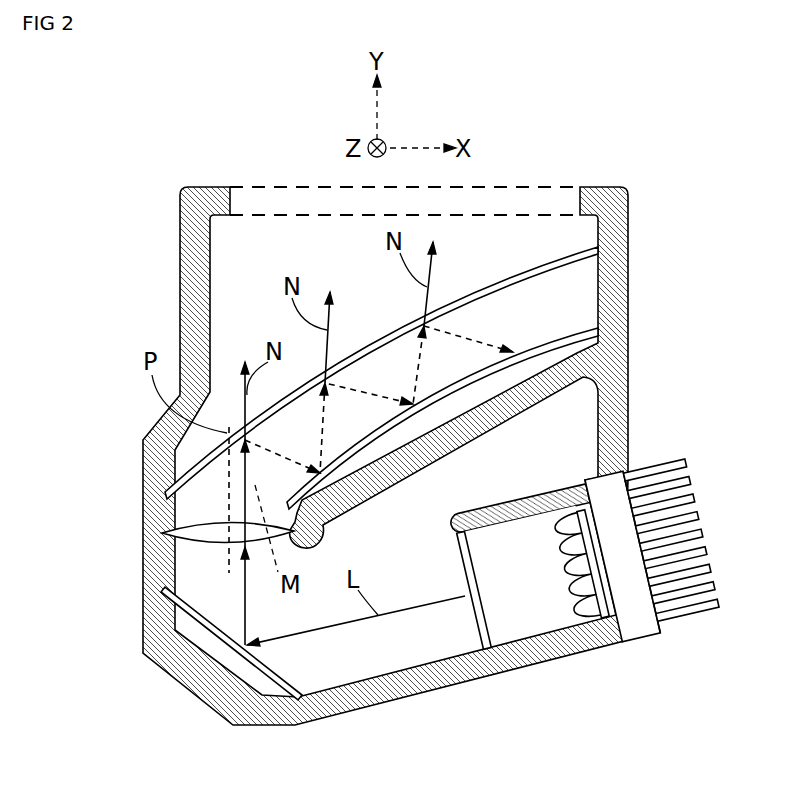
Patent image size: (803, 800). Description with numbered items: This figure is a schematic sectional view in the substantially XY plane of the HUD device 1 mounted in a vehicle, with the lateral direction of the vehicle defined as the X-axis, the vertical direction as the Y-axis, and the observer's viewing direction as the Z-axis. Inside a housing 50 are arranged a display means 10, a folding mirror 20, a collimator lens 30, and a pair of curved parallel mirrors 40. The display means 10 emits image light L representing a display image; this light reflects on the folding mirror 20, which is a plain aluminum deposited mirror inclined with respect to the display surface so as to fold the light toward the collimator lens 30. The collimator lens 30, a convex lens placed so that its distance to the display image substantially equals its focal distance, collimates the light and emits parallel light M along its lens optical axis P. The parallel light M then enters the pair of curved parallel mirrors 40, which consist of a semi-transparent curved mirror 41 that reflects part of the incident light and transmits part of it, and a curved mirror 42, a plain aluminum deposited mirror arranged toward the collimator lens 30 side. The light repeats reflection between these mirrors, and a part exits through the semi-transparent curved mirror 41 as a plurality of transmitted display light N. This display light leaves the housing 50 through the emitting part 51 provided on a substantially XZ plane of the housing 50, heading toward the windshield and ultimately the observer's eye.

The HUD device 1 is at (186, 143).
The display means 10 is at (585, 610).
The folding mirror 20 is at (300, 700).
The collimator lens 30 is at (185, 533).
The pair of curved parallel mirrors 40 is at (449, 348).
The semi-transparent curved mirror 41 is at (607, 246).
The curved mirror 42 is at (485, 395).
The housing 50 is at (190, 284).
The emitting part 51 is at (578, 192).